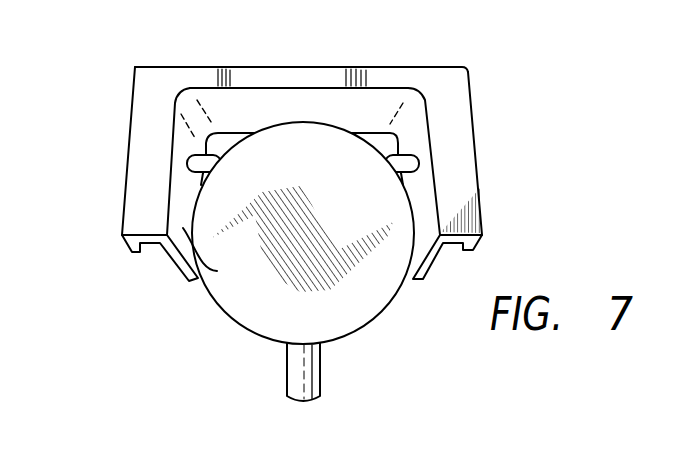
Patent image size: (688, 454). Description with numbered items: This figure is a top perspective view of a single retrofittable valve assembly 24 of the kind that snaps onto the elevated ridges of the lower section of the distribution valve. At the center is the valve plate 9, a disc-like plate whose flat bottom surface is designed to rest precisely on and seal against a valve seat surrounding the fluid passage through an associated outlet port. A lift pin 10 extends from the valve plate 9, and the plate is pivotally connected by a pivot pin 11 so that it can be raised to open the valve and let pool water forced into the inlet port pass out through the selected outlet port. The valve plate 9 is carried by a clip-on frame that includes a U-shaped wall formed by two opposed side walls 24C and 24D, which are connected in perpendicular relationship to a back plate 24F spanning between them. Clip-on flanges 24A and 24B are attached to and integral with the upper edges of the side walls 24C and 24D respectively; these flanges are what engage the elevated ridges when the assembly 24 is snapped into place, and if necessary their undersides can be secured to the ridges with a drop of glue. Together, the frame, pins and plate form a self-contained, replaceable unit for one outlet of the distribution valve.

The valve assembly 24 is at (289, 198).
The clip-on flange 24A is at (158, 132).
The clip-on flange 24B is at (460, 143).
The side wall 24C is at (225, 256).
The side wall 24D is at (425, 188).
The back plate 24F is at (327, 102).
The pivot pin 11 is at (203, 153).
The valve plate 9 is at (300, 321).
The lift pin 10 is at (318, 368).